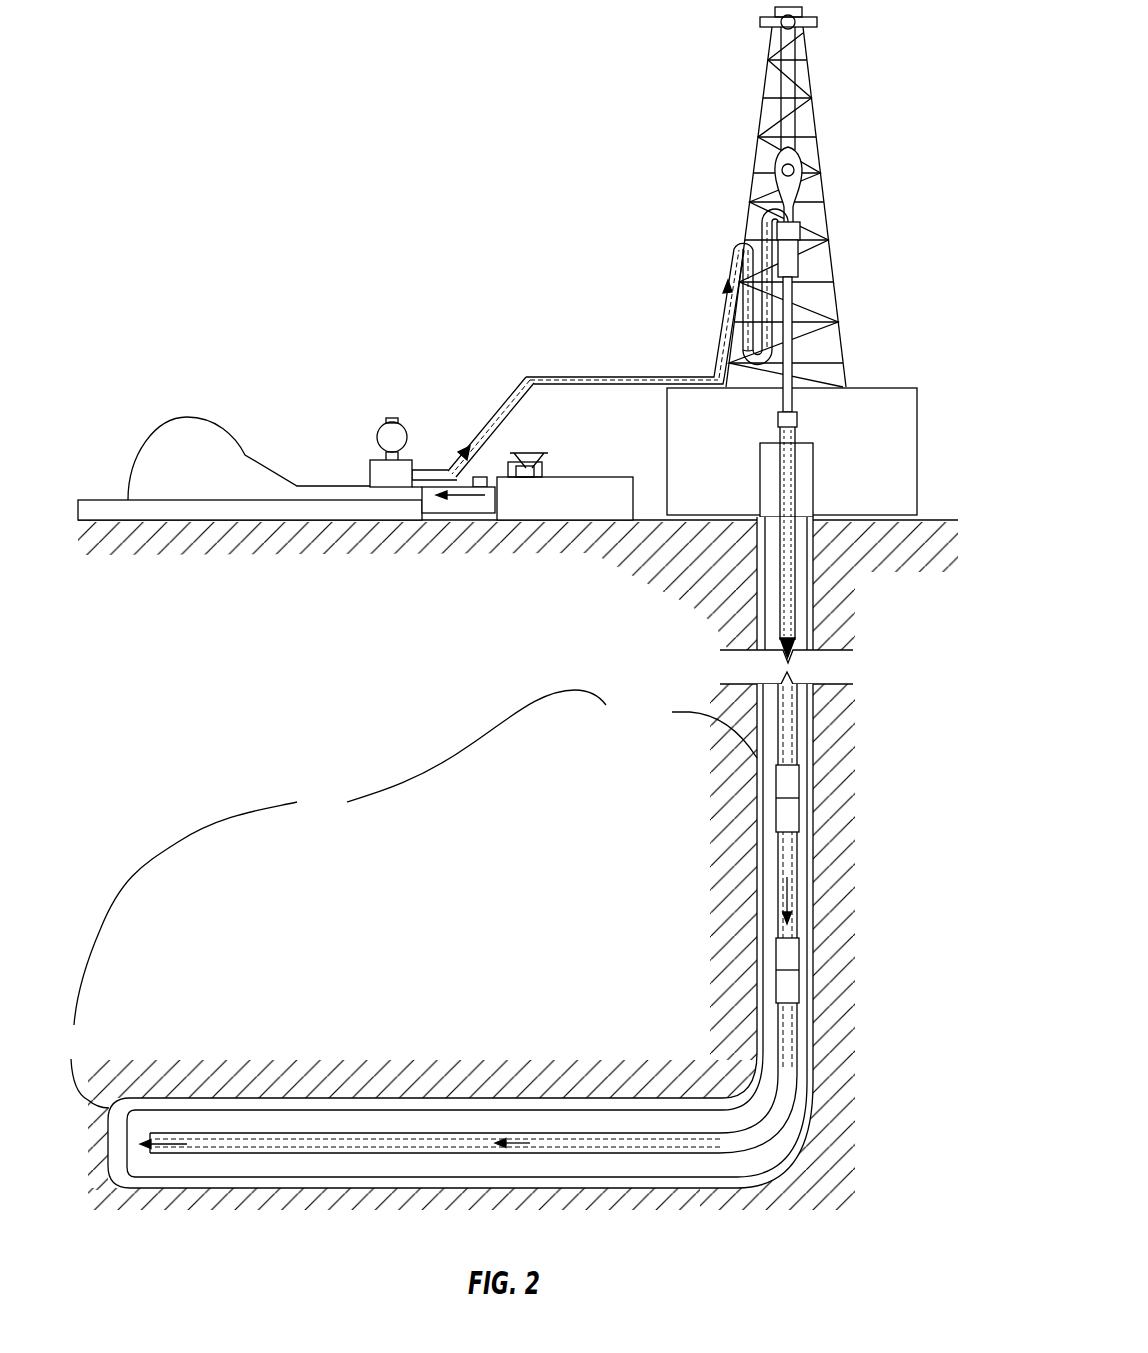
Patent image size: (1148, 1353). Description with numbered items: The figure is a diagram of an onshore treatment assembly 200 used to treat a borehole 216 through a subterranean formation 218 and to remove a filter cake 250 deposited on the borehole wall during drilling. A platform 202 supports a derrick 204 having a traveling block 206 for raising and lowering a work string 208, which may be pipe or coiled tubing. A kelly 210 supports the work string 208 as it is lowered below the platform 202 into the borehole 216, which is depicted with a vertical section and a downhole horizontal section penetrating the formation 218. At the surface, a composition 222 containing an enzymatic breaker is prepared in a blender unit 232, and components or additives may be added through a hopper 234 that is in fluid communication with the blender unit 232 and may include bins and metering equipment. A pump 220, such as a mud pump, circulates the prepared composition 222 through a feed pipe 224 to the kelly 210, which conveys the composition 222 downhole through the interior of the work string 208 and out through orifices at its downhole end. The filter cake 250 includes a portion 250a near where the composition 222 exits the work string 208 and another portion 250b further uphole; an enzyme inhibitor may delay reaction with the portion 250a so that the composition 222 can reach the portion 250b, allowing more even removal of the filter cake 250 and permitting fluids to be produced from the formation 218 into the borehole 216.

The treatment assembly 200 is at (487, 188).
The platform 202 is at (940, 368).
The derrick 204 is at (813, 80).
The traveling block 206 is at (800, 157).
The work string 208 is at (798, 634).
The kelly 210 is at (790, 290).
The borehole 216 is at (813, 724).
The subterranean formation 218 is at (473, 941).
The pump 220 is at (249, 458).
The composition 222 is at (432, 472).
The feed pipe 224 is at (552, 373).
The blender unit 232 is at (540, 505).
The hopper 234 is at (530, 470).
The filter cake 250 is at (340, 857).
The portion of the filter cake 250a is at (75, 1064).
The portion of the filter cake 250b is at (682, 725).